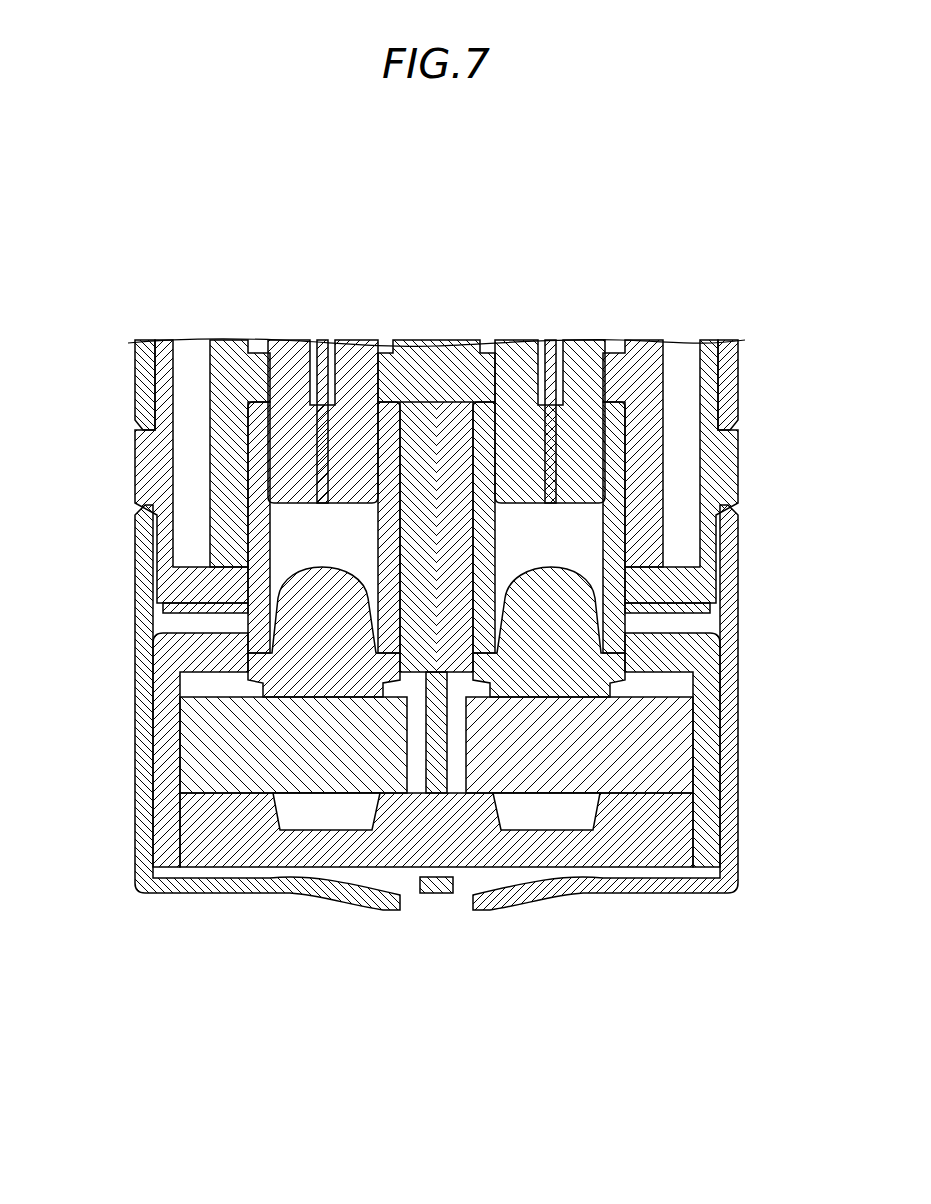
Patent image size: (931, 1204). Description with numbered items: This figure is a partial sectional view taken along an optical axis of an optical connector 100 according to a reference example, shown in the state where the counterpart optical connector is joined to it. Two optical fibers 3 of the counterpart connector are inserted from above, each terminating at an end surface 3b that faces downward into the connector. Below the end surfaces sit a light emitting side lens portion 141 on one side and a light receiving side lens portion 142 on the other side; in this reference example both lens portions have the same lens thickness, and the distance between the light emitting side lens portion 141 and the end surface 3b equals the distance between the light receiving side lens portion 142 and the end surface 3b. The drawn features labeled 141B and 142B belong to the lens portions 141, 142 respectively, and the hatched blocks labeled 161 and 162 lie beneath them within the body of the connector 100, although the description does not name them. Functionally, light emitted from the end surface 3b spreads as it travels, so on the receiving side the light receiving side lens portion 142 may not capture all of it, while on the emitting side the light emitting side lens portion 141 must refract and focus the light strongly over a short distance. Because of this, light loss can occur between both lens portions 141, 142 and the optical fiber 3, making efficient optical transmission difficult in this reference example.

The optical connector 100 is at (660, 920).
The optical fiber 3 is at (316, 385).
The end surface of the optical fiber 3b is at (323, 503).
The light emitting side lens portion 141 is at (690, 588).
The light receiving side lens portion 142 is at (150, 608).
The first contact portion 141B is at (576, 610).
The second contact portion 142B is at (297, 610).
The first fixing block 161 is at (652, 746).
The second fixing block 162 is at (223, 748).